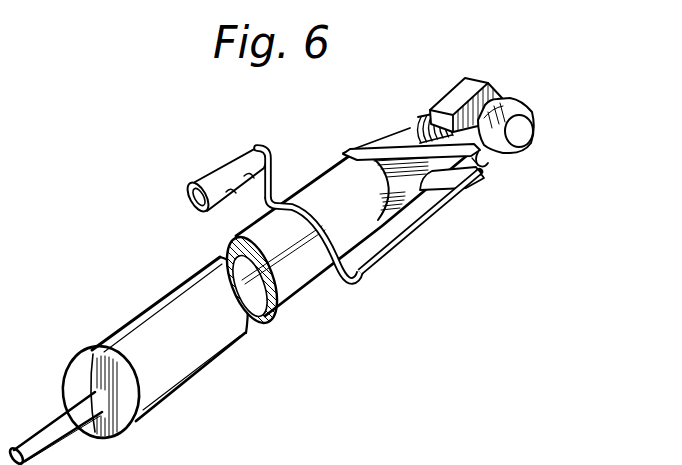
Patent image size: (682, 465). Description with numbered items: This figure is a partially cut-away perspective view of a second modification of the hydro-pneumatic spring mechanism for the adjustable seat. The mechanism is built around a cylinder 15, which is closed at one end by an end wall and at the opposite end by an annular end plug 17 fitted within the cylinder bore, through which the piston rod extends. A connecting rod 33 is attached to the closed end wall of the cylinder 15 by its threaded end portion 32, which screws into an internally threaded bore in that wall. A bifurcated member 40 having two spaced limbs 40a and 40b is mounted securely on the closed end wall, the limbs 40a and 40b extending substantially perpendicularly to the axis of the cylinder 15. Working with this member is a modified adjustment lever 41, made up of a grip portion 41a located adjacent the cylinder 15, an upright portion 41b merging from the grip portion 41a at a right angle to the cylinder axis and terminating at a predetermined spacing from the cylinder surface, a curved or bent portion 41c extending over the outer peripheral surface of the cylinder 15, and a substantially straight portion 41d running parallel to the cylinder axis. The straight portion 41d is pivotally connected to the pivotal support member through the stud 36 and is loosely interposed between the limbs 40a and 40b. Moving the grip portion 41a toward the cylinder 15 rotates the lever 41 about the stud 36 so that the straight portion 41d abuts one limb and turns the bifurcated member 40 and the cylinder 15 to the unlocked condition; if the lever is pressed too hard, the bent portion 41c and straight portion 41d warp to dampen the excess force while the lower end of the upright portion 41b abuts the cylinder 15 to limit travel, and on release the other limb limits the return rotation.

The cylinder 15 is at (190, 374).
The annular end plug 17 is at (83, 367).
The threaded end portion 32 is at (421, 118).
The connecting rod 33 is at (476, 86).
The stud 36 is at (528, 132).
The bifurcated member 40 is at (354, 155).
The limb 40a is at (481, 162).
The limb 40b is at (457, 195).
The adjustment lever 41 is at (283, 180).
The grip portion 41a is at (222, 168).
The upright portion 41b is at (257, 195).
The curved or bent portion 41c is at (322, 278).
The straight portion 41d is at (383, 247).